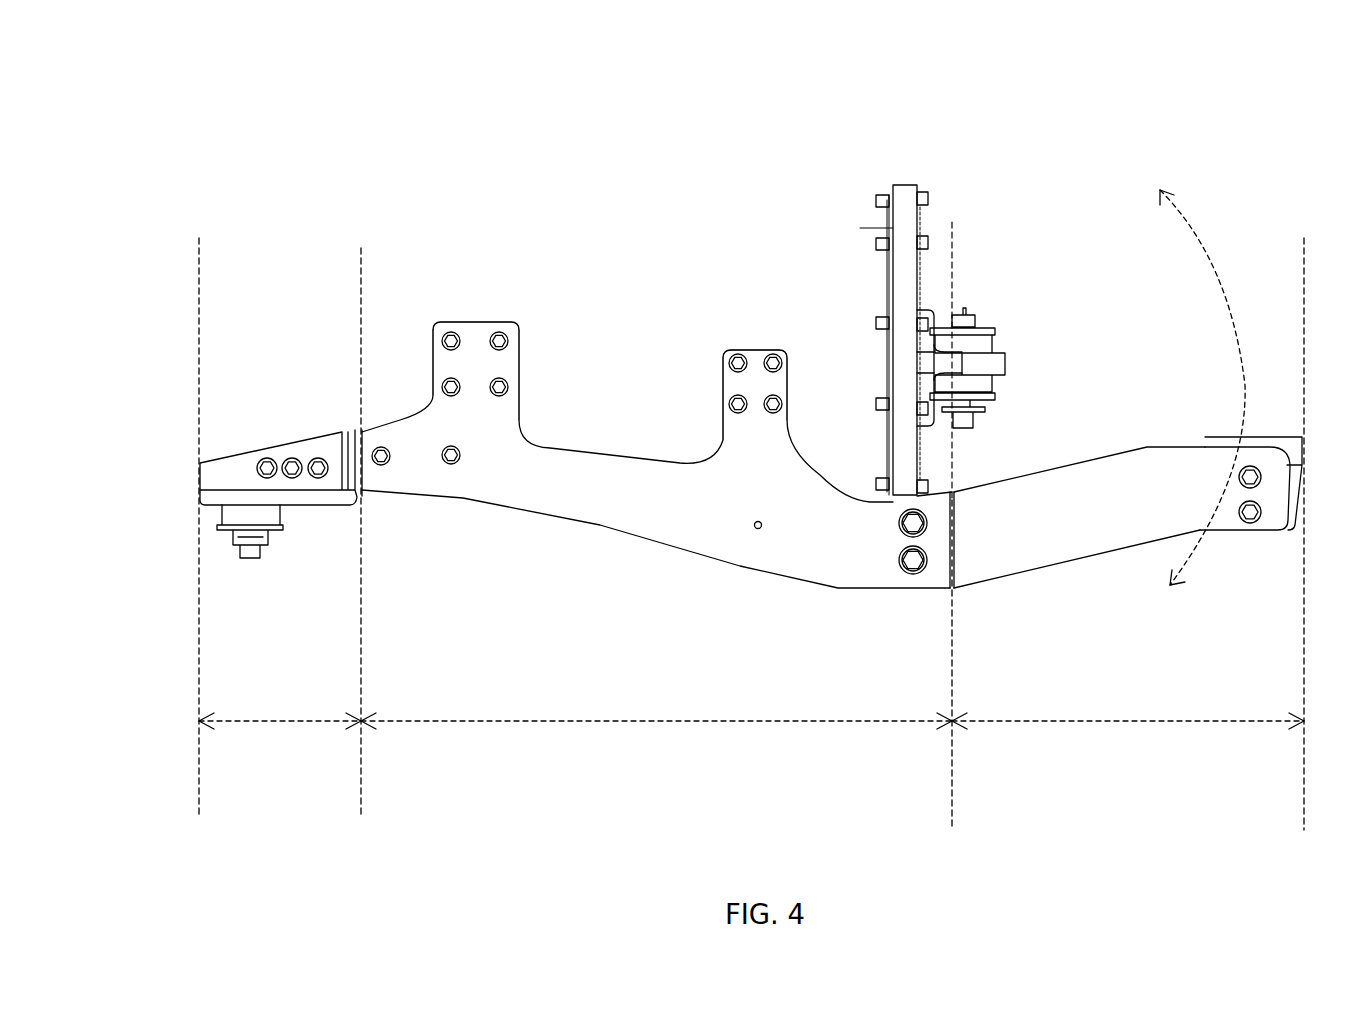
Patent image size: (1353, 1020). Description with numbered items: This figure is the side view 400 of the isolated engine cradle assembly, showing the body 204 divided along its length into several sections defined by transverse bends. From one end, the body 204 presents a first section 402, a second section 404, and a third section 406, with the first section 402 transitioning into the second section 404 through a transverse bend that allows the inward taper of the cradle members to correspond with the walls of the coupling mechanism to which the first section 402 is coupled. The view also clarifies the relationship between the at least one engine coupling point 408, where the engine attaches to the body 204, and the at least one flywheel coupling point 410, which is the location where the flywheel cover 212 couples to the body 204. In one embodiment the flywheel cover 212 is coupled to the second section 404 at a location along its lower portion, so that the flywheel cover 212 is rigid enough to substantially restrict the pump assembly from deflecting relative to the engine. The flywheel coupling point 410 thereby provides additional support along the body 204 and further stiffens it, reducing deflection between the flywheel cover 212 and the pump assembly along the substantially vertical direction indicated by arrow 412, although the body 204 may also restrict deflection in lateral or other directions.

The side view 400 is at (220, 165).
The body 204 is at (515, 232).
The flywheel cover 212 is at (900, 228).
The engine coupling point 408 is at (755, 380).
The flywheel coupling point 410 is at (908, 541).
The arrow 412 is at (1212, 255).
The first section 402 is at (280, 724).
The second section 404 is at (633, 724).
The third section 406 is at (1122, 724).